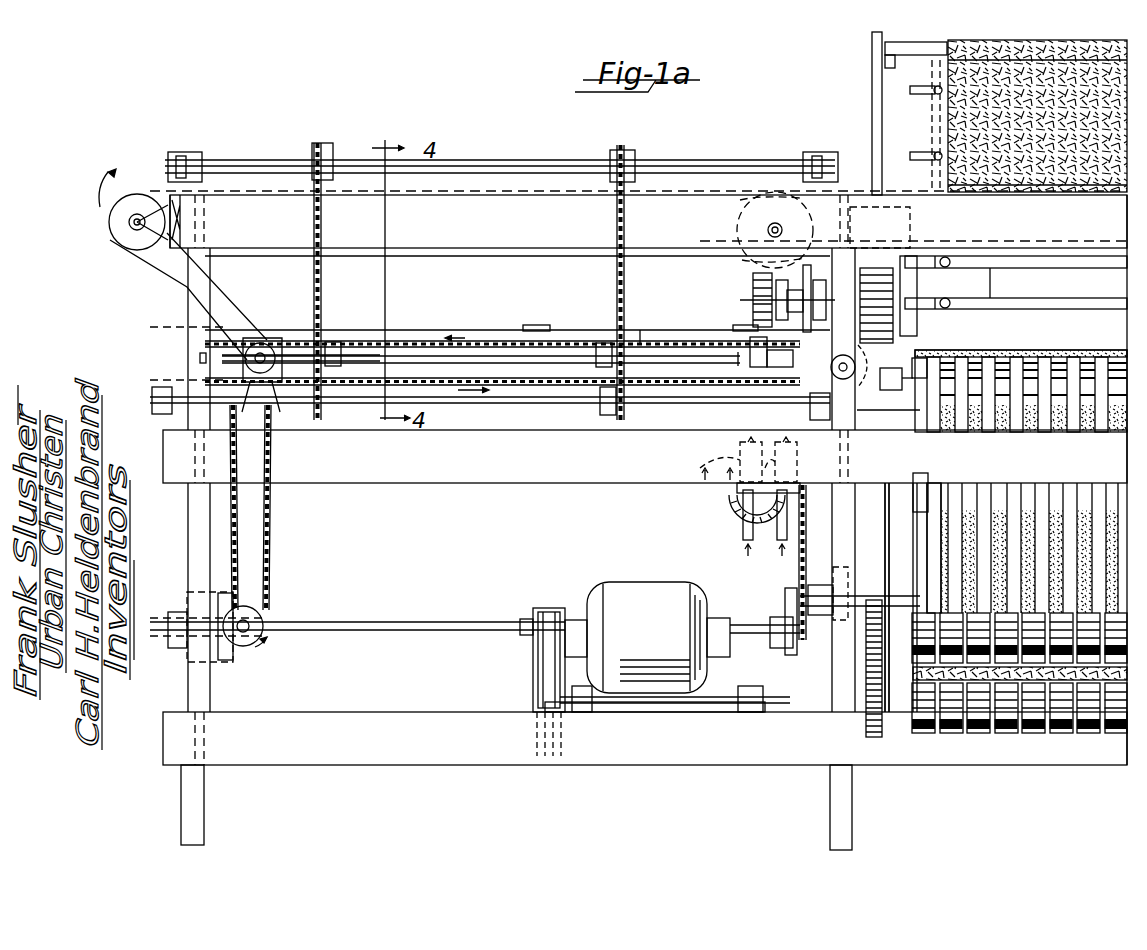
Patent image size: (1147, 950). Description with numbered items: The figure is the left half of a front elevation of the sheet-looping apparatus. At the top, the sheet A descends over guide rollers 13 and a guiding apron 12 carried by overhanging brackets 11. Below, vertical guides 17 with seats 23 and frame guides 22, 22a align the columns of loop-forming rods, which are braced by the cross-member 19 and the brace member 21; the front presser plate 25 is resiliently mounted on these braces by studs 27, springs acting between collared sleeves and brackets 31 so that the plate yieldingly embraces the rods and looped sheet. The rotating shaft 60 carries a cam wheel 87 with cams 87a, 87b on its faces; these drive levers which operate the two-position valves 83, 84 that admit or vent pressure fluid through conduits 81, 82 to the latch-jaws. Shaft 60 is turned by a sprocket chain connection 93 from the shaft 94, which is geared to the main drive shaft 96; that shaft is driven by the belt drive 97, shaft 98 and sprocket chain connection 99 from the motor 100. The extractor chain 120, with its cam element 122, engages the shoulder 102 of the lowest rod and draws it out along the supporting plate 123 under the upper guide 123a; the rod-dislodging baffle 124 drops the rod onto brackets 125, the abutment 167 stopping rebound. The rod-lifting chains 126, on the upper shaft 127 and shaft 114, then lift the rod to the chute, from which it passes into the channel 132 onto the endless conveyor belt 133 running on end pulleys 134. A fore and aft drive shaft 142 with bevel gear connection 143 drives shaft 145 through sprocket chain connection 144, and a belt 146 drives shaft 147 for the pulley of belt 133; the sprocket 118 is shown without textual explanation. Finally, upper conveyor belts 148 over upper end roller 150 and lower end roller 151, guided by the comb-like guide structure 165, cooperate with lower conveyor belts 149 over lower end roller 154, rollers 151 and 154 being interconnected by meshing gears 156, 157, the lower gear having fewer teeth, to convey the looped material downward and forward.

The sheet A is at (1038, 48).
The brackets 11 is at (870, 62).
The guiding apron 12 is at (912, 76).
The guide rollers 13 is at (912, 44).
The guides 17 is at (905, 290).
The cross-member 19 is at (1028, 258).
The brace member 21 is at (1050, 292).
The guides 22 is at (880, 227).
The guides 22a is at (890, 280).
The seats 23 is at (905, 333).
The front presser plate 25 is at (995, 275).
The studs 27 is at (952, 258).
The brackets 31 is at (960, 310).
The rotating shaft 60 is at (750, 310).
The conduit 81 is at (725, 512).
The conduit 82 is at (725, 505).
The two-position valve 83 is at (740, 450).
The two-position valve 84 is at (710, 468).
The cam wheel 87 is at (755, 303).
The cam 87a is at (760, 268).
The cam 87b is at (778, 278).
The sprocket chain connection 93 is at (800, 545).
The shaft 94 is at (895, 588).
The main drive shaft 96 is at (372, 621).
The belt drive 97 is at (535, 660).
The shaft 98 is at (730, 700).
The sprocket chain connection 99 is at (782, 660).
The motor 100 is at (660, 655).
The shoulder 102 is at (200, 357).
The shaft 114 is at (532, 405).
The sprocket 118 is at (762, 198).
The extractor chain 120 is at (396, 345).
The cam element 122 is at (442, 405).
The supporting plate 123 is at (478, 345).
The upper guide 123a is at (640, 332).
The rod-dislodging baffle 124 is at (190, 345).
The brackets 125 is at (334, 345).
The rod-lifting chains 126 is at (313, 298).
The upper shaft 127 is at (450, 164).
The channel 132 is at (512, 190).
The endless conveyor belt 133 is at (163, 190).
The end pulleys 134 is at (104, 172).
The fore and aft drive shaft 142 is at (265, 620).
The bevel gear connection 143 is at (225, 655).
The sprocket chain connection 144 is at (278, 498).
The shaft 145 is at (283, 344).
The belt 146 is at (167, 272).
The shaft 147 is at (136, 222).
The upper conveyor belts 148 is at (1080, 500).
The lower conveyor belts 149 is at (975, 703).
The upper end roller 150 is at (1093, 368).
The lower end roller 151 is at (935, 695).
The lower end roller 154 is at (1110, 700).
The gear 156 is at (866, 650).
The gear 157 is at (870, 735).
The comb-like guide structure 165 is at (945, 500).
The abutment 167 is at (748, 347).